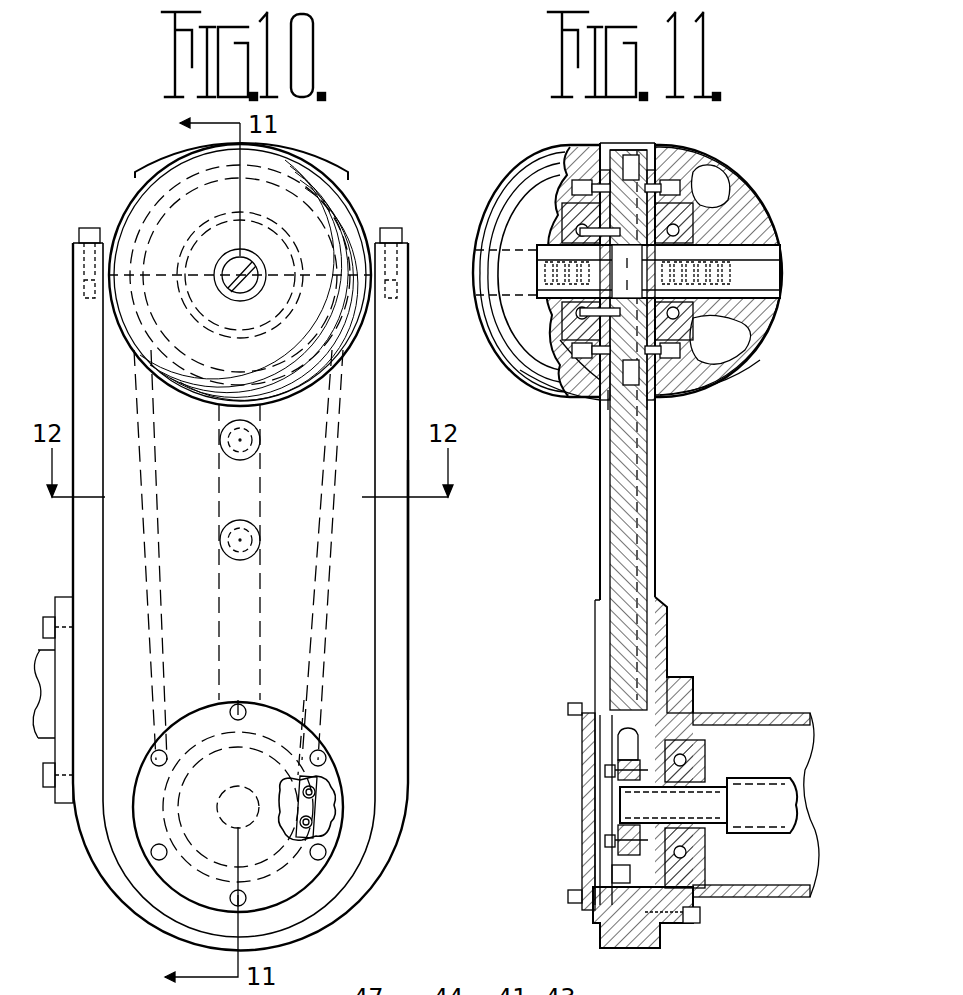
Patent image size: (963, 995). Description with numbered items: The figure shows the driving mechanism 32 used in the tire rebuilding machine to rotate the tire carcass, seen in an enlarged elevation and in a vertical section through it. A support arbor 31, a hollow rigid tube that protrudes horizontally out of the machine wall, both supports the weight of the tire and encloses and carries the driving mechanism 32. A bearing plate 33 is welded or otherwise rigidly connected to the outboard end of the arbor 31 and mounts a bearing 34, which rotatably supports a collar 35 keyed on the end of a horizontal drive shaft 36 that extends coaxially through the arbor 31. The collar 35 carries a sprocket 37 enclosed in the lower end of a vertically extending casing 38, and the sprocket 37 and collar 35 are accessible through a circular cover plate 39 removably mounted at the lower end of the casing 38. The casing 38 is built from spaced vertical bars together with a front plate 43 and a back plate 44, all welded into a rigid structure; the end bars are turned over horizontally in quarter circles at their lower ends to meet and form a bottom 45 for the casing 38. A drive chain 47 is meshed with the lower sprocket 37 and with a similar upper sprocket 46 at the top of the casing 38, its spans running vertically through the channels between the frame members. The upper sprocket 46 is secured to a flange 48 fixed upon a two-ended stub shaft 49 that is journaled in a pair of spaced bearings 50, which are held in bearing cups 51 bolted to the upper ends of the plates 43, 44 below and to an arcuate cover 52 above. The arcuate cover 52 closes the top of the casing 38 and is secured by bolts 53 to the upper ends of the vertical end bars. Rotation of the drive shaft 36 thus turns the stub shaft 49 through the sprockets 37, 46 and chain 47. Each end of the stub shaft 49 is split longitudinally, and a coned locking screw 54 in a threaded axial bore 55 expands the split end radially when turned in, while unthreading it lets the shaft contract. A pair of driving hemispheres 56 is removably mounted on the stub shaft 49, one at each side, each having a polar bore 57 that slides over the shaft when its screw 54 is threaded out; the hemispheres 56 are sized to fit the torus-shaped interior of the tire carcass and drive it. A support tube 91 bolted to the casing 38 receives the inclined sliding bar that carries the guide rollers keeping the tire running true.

In FIG. 11, the support arbor 31 is at (769, 710).
In FIG. 10, the driving mechanism 32 is at (135, 922).
In FIG. 11, the driving mechanism 32 is at (722, 626).
In FIG. 11, the bearing plate 33 is at (693, 697).
In FIG. 11, the bearing 34 is at (705, 757).
In FIG. 11, the collar 35 is at (710, 778).
In FIG. 11, the drive shaft 36 is at (750, 835).
In FIG. 11, the sprocket 37 is at (620, 748).
In FIG. 10, the casing 38 is at (412, 573).
In FIG. 11, the casing 38 is at (660, 590).
In FIG. 11, the cover plate 39 is at (585, 853).
In FIG. 10, the front plate 43 is at (355, 610).
In FIG. 11, the front plate 43 is at (597, 622).
In FIG. 11, the back plate 44 is at (657, 566).
In FIG. 10, the bottom 45 is at (338, 920).
In FIG. 11, the bottom 45 is at (625, 950).
In FIG. 11, the upper sprocket 46 is at (640, 388).
In FIG. 10, the drive chain 47 is at (328, 678).
In FIG. 11, the drive chain 47 is at (612, 875).
In FIG. 11, the flange 48 is at (683, 210).
In FIG. 11, the stub shaft 49 is at (727, 227).
In FIG. 11, the bearings 50 is at (565, 220).
In FIG. 11, the bearing cups 51 is at (707, 220).
In FIG. 10, the arcuate cover 52 is at (345, 180).
In FIG. 11, the arcuate cover 52 is at (657, 145).
In FIG. 10, the bolts 53 is at (86, 228).
In FIG. 10, the coned locking screw 54 is at (246, 266).
In FIG. 11, the coned locking screw 54 is at (773, 262).
In FIG. 11, the threaded axial bore 55 is at (490, 235).
In FIG. 10, the driving hemispheres 56 is at (318, 345).
In FIG. 11, the driving hemispheres 56 is at (555, 375).
In FIG. 11, the polar bore 57 is at (747, 245).
In FIG. 10, the support tube 91 is at (51, 700).